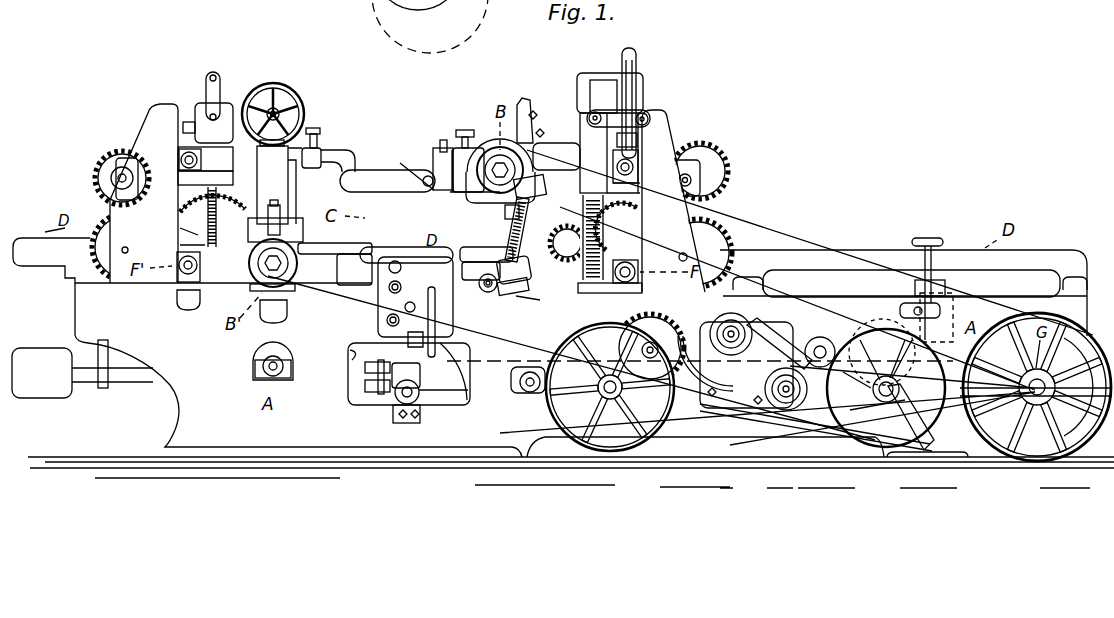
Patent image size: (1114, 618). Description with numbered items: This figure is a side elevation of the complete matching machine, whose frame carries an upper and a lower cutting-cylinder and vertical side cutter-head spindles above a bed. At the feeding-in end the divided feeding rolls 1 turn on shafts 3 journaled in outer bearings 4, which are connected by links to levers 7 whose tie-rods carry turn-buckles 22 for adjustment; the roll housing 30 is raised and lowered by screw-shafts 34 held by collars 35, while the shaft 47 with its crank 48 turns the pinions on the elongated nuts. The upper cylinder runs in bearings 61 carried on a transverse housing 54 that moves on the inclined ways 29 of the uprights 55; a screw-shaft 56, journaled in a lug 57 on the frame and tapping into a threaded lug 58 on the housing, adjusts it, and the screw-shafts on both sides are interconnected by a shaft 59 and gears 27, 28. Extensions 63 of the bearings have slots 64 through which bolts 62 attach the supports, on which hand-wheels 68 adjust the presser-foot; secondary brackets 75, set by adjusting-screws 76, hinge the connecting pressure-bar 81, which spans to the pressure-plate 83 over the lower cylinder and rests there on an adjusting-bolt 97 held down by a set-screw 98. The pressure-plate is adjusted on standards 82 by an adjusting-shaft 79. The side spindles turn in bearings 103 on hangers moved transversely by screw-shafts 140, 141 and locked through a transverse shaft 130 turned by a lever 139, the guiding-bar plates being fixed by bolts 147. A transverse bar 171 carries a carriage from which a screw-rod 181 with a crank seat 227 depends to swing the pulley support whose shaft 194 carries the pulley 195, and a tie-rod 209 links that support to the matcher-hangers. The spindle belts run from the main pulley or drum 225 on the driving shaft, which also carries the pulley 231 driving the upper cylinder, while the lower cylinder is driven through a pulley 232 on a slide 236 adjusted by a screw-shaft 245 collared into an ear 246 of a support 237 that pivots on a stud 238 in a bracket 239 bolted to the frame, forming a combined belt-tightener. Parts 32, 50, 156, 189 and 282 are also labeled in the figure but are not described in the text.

The feeding roll 1 is at (638, 146).
The roll shaft 3 is at (636, 164).
The outer bearing 4 is at (638, 180).
The lever 7 is at (638, 78).
The turn-buckle 22 is at (630, 50).
The gear 27 is at (498, 290).
The gear 28 is at (524, 292).
The inclined ways 29 is at (548, 144).
The housing 30 is at (610, 153).
The inclined standard 32 is at (673, 201).
The screw-shaft 34 is at (610, 237).
The collar 35 is at (590, 278).
The shaft 47 is at (586, 114).
The crank 48 is at (648, 116).
The guide box 50 is at (585, 76).
The housing 54 is at (512, 214).
The uprights 55 is at (541, 234).
The screw-shaft 56 is at (524, 210).
The lug 57 is at (524, 265).
The threaded lug 58 is at (529, 187).
The shaft 59 is at (482, 290).
The bearing 61 is at (497, 192).
The bolt 62 is at (440, 158).
The extension 63 is at (456, 194).
The slot 64 is at (440, 180).
The hand-wheel 68 is at (467, 132).
The secondary bracket 75 is at (441, 148).
The adjusting-screw 76 is at (453, 140).
The adjusting-shaft 79 is at (268, 108).
The connecting pressure-bar 81 is at (387, 181).
The standard 82 is at (275, 191).
The pressure-plate 83 is at (292, 192).
The adjusting-bolt 97 is at (314, 126).
The set-screw 98 is at (322, 132).
The bearing 103 is at (370, 268).
The shaft 130 is at (445, 290).
The lever 139 is at (500, 292).
The screw-shaft 140 is at (390, 300).
The screw-shaft 141 is at (397, 258).
The bolt 147 is at (388, 322).
The gear casing 156 is at (457, 406).
The transverse bar 171 is at (960, 294).
The screw-rod 181 is at (944, 330).
The hand wheel 189 is at (283, 92).
The shaft 194 is at (427, 8).
The pulley 195 is at (487, 22).
The tie-rod 209 is at (500, 363).
The main pulley or drum 225 is at (1098, 330).
The seat 227 is at (990, 248).
The pulley 231 is at (1012, 462).
The pulley 232 is at (899, 384).
The slide 236 is at (834, 398).
The support 237 is at (850, 418).
The stud 238 is at (745, 352).
The bracket 239 is at (706, 395).
The screw-shaft 245 is at (818, 344).
The ear 246 is at (757, 372).
The clamping screw 282 is at (920, 288).